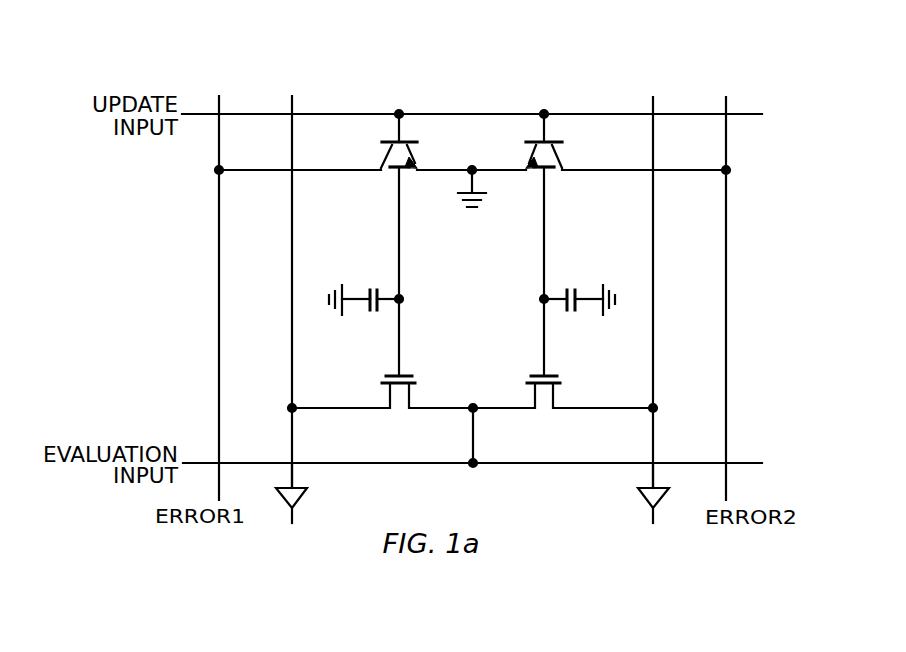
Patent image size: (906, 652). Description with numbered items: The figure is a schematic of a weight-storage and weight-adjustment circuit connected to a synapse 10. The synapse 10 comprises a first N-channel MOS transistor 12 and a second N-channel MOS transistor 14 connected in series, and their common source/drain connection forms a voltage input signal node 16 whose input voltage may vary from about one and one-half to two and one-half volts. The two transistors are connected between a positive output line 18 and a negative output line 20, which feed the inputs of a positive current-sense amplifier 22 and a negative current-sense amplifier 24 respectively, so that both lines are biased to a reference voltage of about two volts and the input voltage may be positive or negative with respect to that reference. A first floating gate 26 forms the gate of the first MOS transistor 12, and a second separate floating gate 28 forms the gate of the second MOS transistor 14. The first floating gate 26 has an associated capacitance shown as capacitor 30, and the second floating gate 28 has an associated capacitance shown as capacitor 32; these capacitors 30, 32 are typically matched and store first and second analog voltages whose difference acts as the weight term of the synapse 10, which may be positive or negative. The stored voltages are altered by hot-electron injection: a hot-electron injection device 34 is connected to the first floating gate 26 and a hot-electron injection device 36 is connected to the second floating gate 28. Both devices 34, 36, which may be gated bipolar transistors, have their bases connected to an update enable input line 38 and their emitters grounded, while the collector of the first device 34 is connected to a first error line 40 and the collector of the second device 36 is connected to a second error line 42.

The synapse 10 is at (472, 70).
The first N-channel MOS transistor 12 is at (413, 385).
The second N-channel MOS transistor 14 is at (557, 385).
The voltage input signal node 16 is at (474, 440).
The positive output line 18 is at (293, 368).
The negative output line 20 is at (654, 360).
The positive current-sense amplifier 22 is at (308, 495).
The negative current-sense amplifier 24 is at (640, 500).
The first floating gate 26 is at (400, 270).
The second floating gate 28 is at (543, 272).
The capacitor 30 is at (375, 288).
The capacitor 32 is at (573, 288).
The hot-electron injection device 34 is at (382, 144).
The hot-electron injection device 36 is at (562, 144).
The update enable input line 38 is at (474, 113).
The first error line 40 is at (218, 252).
The second error line 42 is at (727, 292).